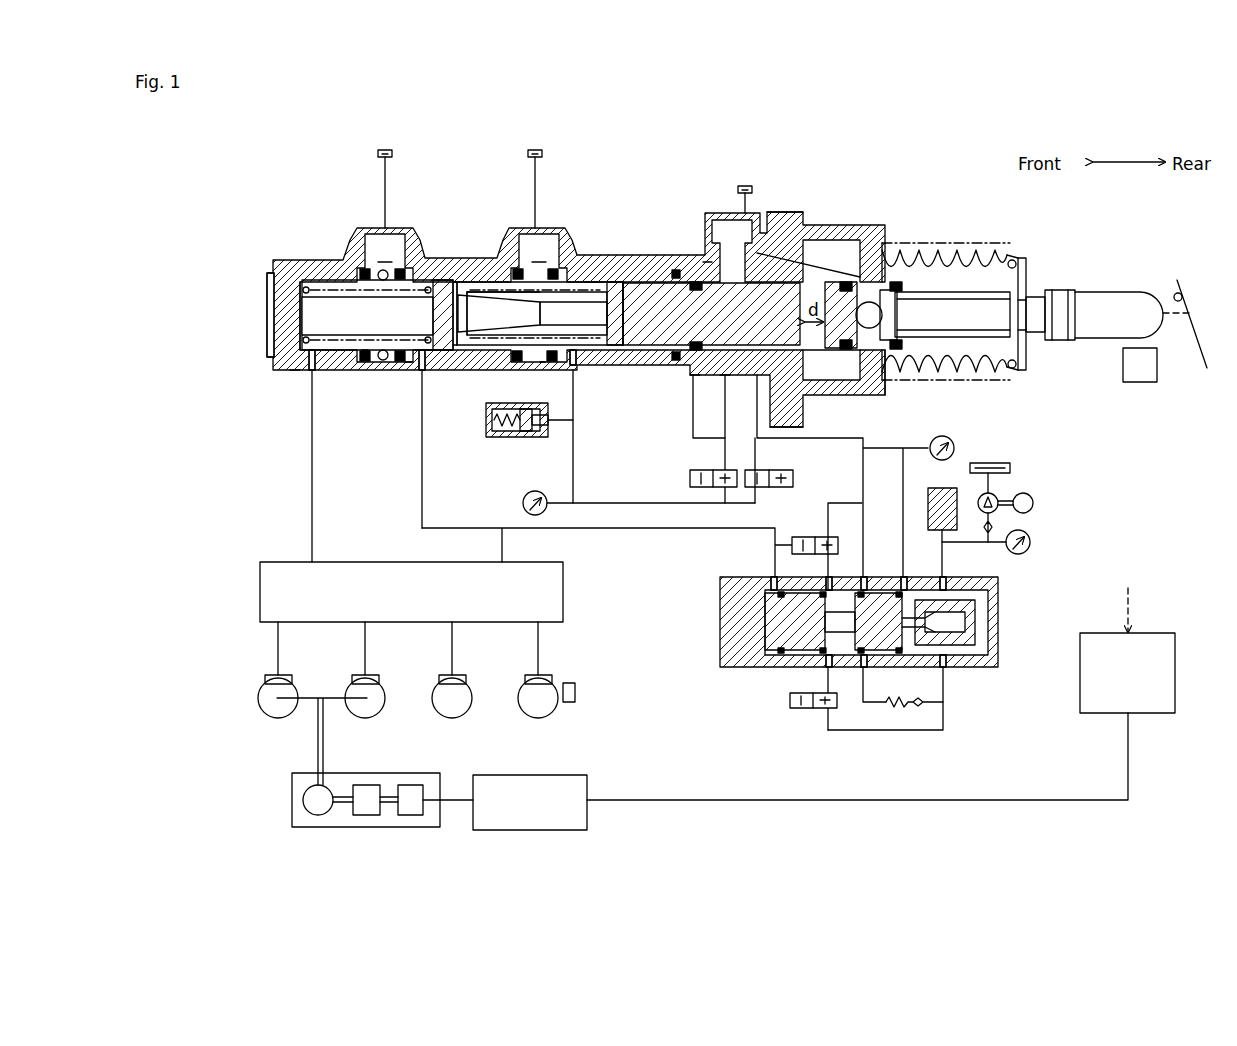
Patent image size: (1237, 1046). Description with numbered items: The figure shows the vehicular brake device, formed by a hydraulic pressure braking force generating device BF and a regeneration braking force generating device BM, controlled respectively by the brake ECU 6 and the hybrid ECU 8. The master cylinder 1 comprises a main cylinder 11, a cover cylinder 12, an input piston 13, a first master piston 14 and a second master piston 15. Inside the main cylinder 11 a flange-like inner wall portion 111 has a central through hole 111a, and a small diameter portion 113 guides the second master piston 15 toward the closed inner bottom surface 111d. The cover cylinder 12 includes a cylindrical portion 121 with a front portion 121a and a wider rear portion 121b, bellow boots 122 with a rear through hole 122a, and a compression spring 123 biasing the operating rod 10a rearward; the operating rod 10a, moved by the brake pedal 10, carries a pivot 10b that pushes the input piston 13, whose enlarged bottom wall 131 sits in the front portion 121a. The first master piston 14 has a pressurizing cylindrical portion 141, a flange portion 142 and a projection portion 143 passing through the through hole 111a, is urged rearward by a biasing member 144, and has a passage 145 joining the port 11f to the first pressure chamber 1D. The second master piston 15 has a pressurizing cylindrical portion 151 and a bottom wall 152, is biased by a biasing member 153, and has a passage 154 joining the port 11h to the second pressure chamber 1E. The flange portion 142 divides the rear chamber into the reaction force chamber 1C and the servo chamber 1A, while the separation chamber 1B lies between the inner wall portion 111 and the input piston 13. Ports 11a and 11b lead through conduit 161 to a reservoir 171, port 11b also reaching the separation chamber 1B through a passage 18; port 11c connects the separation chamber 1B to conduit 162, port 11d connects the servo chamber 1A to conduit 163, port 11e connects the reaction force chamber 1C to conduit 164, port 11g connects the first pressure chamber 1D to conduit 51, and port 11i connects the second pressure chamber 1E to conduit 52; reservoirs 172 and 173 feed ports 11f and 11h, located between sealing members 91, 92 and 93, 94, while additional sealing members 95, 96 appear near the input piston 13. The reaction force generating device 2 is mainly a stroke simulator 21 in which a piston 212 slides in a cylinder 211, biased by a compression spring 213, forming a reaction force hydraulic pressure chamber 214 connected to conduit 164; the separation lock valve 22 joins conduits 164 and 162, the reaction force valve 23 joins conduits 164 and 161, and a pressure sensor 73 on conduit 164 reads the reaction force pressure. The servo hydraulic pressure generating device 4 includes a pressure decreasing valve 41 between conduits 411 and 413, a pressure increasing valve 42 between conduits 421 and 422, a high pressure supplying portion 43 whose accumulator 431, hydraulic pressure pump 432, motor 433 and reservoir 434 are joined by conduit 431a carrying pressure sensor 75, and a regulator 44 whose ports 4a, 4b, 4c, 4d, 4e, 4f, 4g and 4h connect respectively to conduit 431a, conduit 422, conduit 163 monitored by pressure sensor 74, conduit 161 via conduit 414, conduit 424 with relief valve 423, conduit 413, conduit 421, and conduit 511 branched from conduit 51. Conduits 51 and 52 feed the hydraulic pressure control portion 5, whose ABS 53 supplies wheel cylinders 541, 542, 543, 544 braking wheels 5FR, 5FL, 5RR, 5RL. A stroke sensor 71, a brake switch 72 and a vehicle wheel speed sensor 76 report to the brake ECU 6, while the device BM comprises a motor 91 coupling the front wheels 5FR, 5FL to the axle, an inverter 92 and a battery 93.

The master cylinder 1 is at (262, 275).
The hydraulic pressure braking force generating device BF is at (255, 185).
The main cylinder 11 is at (290, 258).
The inner wall portion 111 is at (700, 280).
The through hole 111a is at (674, 268).
The inner bottom surface 111d is at (270, 322).
The port 11a is at (758, 400).
The port 11b is at (778, 222).
The port 11c is at (724, 377).
The port 11d is at (692, 377).
The port 11e is at (580, 366).
The port 11f is at (536, 260).
The port 11g is at (425, 380).
The port 11h is at (388, 260).
The port 11i is at (300, 372).
The small diameter portion 113 is at (410, 372).
The cover cylinder 12 is at (1015, 440).
The cylindrical portion 121 is at (945, 425).
The front portion 121a is at (840, 352).
The rear portion 121b is at (885, 372).
The boots 122 is at (1020, 372).
The through hole 122a is at (1022, 302).
The compression spring 123 is at (1022, 364).
The input piston 13 is at (935, 255).
The bottom wall 131 is at (872, 305).
The first master piston 14 is at (602, 347).
The pressurizing cylindrical portion 141 is at (590, 280).
The flange portion 142 is at (638, 282).
The projection portion 143 is at (792, 297).
The biasing member 144 is at (466, 280).
The passage 145 is at (490, 292).
The second master piston 15 is at (442, 300).
The pressurizing cylindrical portion 151 is at (365, 362).
The bottom wall 152 is at (432, 362).
The biasing member 153 is at (322, 282).
The passage 154 is at (380, 268).
The conduit 161 is at (790, 440).
The conduit 162 is at (722, 430).
The conduit 163 is at (690, 425).
The conduit 164 is at (574, 415).
The reservoir 171 is at (747, 189).
The reservoir 172 is at (537, 178).
The reservoir 173 is at (387, 178).
The passage 18 is at (840, 305).
The servo chamber 1A is at (660, 348).
The separation chamber 1B is at (812, 325).
The reaction force chamber 1C is at (630, 350).
The first pressure chamber 1D is at (468, 350).
The second pressure chamber 1E is at (326, 372).
The reaction force generating device 2 is at (505, 472).
The stroke simulator 21 is at (497, 332).
The cylinder 211 is at (520, 345).
The piston 212 is at (524, 433).
The compression spring 213 is at (492, 432).
The reaction force hydraulic pressure chamber 214 is at (541, 428).
The separation lock valve 22 is at (706, 470).
The reaction force valve 23 is at (758, 470).
The servo hydraulic pressure generating device 4 is at (1008, 612).
The pressure decreasing valve 41 is at (794, 548).
The conduit 411 is at (832, 508).
The conduit 413 is at (825, 580).
The conduit 414 is at (864, 532).
The pressure increasing valve 42 is at (790, 708).
The conduit 421 is at (820, 693).
The conduit 422 is at (846, 732).
The relief valve 423 is at (903, 707).
The conduit 424 is at (862, 706).
The high pressure supplying portion 43 is at (1062, 500).
The accumulator 431 is at (928, 515).
The conduit 431a is at (948, 546).
The hydraulic pressure pump 432 is at (978, 498).
The motor 433 is at (1032, 500).
The reservoir 434 is at (1012, 468).
The regulator 44 is at (998, 656).
The port 4a is at (945, 590).
The port 4b is at (946, 668).
The port 4c is at (906, 580).
The port 4d is at (866, 580).
The port 4e is at (866, 668).
The port 4f is at (833, 590).
The port 4g is at (831, 668).
The port 4h is at (772, 578).
The hydraulic pressure control portion 5 is at (243, 530).
The conduit 51 is at (422, 486).
The conduit 511 is at (690, 528).
The conduit 52 is at (312, 490).
The ABS 53 is at (370, 564).
The wheel cylinder 541 is at (282, 682).
The wheel cylinder 542 is at (370, 682).
The wheel cylinder 543 is at (455, 682).
The wheel cylinder 544 is at (542, 682).
The front right wheel 5FR is at (262, 710).
The front left wheel 5FL is at (372, 716).
The rear right wheel 5RR is at (456, 716).
The rear left wheel 5RL is at (545, 716).
The brake ECU 6 is at (1160, 640).
The stroke sensor 71 is at (1138, 383).
The brake switch 72 is at (1175, 294).
The pressure sensor 73 is at (540, 492).
The pressure sensor 74 is at (935, 458).
The pressure sensor 75 is at (1025, 552).
The vehicle wheel speed sensor 76 is at (576, 696).
The hybrid ECU 8 is at (488, 775).
The sealing member 91 is at (552, 268).
The sealing member 92 is at (516, 268).
The sealing member 93 is at (401, 268).
The sealing member 94 is at (363, 268).
The seal 95 is at (848, 282).
The seal 96 is at (896, 282).
The brake pedal 10 is at (1182, 288).
The operating rod 10a is at (1032, 298).
The pivot 10b is at (962, 305).
The regeneration braking force generating device BM is at (428, 773).